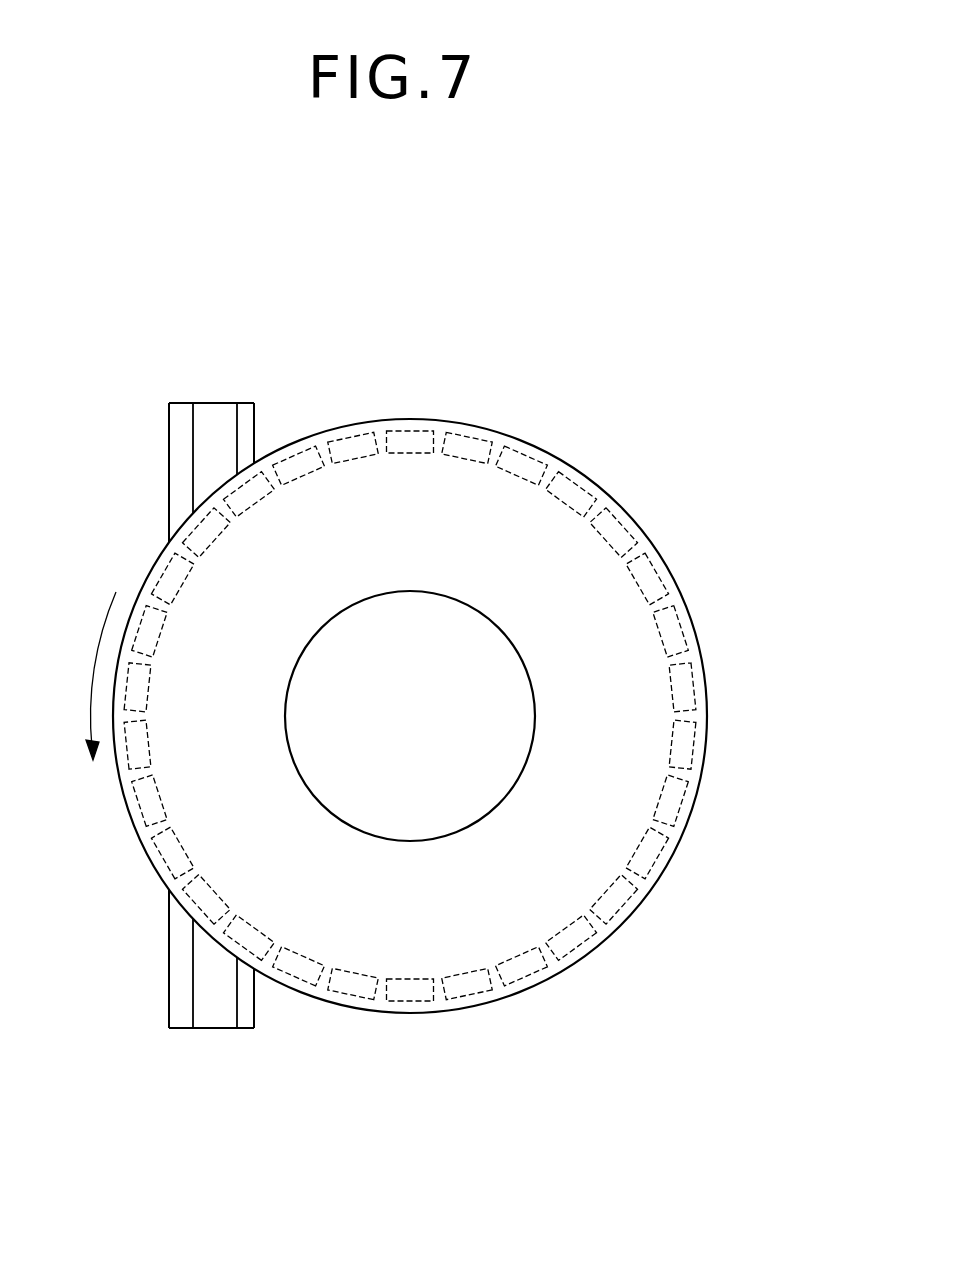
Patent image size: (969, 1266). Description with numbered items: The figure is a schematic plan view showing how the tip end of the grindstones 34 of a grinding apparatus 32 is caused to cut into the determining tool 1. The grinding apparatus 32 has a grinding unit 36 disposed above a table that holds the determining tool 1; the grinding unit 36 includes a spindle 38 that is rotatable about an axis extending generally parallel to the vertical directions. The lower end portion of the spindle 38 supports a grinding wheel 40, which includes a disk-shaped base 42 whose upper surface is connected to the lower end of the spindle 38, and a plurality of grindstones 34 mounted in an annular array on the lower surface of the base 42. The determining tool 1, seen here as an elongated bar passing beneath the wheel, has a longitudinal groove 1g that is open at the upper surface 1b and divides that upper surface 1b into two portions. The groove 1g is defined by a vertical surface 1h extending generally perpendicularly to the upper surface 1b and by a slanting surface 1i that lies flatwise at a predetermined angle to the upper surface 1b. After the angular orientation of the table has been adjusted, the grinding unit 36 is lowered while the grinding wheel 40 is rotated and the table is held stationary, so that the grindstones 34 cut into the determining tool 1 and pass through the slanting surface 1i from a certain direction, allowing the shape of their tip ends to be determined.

The determining tool 1 is at (158, 445).
The longitudinal groove 1g is at (143, 302).
The slanting surface 1i is at (200, 418).
The vertical surface 1h is at (237, 425).
The upper surface 1b is at (182, 1022).
The grinding apparatus 32 is at (585, 368).
The grinding unit 36 is at (410, 716).
The spindle 38 is at (525, 728).
The grindstones 34 is at (431, 1041).
The disk-shaped base 42 is at (414, 1025).
The grinding wheel 40 is at (435, 1098).